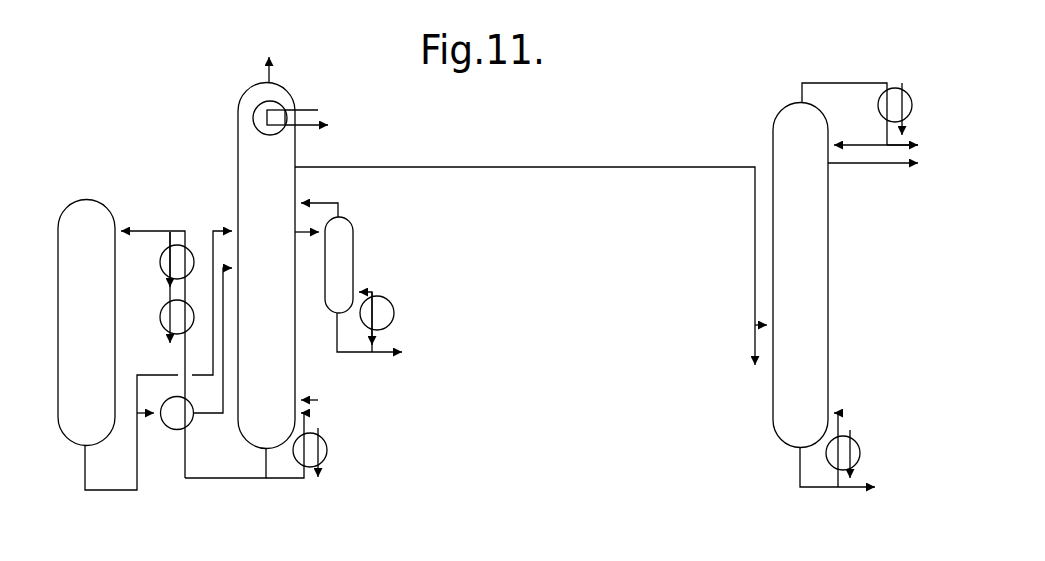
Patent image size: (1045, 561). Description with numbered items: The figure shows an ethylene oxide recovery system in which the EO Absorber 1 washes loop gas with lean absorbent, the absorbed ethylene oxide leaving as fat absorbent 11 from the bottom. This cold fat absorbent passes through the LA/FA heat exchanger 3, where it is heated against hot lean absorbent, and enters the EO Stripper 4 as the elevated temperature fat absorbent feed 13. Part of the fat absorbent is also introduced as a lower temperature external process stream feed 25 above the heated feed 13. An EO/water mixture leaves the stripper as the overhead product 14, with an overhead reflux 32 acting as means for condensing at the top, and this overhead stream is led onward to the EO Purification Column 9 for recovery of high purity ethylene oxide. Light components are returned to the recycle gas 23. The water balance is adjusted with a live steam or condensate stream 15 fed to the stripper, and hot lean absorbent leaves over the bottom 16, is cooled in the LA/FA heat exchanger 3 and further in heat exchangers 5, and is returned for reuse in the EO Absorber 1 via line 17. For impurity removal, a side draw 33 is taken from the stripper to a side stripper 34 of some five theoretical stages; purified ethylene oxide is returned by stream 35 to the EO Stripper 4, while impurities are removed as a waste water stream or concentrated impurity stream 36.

The EO Absorber 1 is at (82, 210).
The LA/FA heat exchanger 3 is at (170, 422).
The EO Stripper 4 is at (255, 158).
The heat exchangers 5 is at (163, 267).
The EO Purification Column 9 is at (800, 255).
The Fat Absorbent 11 is at (83, 455).
The heated FA 13 is at (230, 267).
The overhead product 14 is at (302, 162).
The live steam or condensate stream 15 is at (306, 401).
The bottom stream of EO Stripper 16 is at (265, 455).
The line 17 is at (131, 227).
The recycle gas 23 is at (265, 72).
The external process stream feed 25 is at (222, 226).
The overhead reflux 32 is at (318, 110).
The side draw 33 is at (308, 229).
The side stripper 34 is at (343, 243).
The return of purified EO 35 is at (320, 203).
The waste water stream or concentrated impurity stream 36 is at (337, 318).